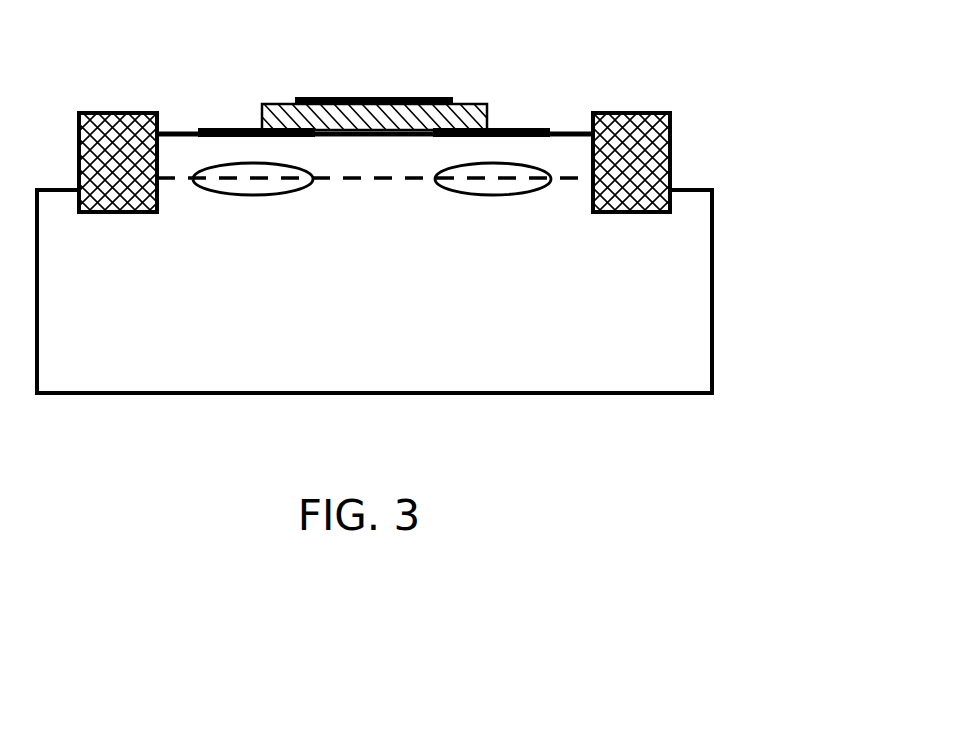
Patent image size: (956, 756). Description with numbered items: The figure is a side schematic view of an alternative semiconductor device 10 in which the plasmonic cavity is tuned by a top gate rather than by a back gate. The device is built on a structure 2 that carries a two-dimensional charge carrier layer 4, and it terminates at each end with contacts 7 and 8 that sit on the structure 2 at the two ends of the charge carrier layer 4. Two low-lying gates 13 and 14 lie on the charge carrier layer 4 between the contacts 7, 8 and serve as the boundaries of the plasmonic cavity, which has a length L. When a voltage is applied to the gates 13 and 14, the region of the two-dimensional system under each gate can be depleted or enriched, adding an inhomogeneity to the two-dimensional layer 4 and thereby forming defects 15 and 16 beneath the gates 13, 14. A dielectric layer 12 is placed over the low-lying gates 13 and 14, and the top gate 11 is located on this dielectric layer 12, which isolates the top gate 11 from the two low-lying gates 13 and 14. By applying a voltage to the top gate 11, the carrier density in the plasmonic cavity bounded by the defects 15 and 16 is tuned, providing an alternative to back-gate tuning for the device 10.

The structure 2 is at (122, 382).
The two-dimensional charge carrier layer 4 is at (373, 180).
The contact 7 is at (105, 133).
The contact 8 is at (625, 142).
The semiconductor device 10 is at (705, 120).
The top gate 11 is at (368, 98).
The dielectric layer 12 is at (472, 115).
The low-lying gate 13 is at (228, 132).
The low-lying gate 14 is at (529, 128).
The defect 15 is at (250, 195).
The defect 16 is at (497, 195).